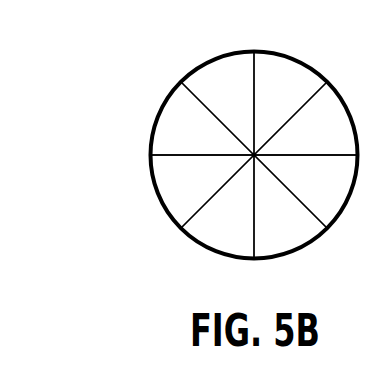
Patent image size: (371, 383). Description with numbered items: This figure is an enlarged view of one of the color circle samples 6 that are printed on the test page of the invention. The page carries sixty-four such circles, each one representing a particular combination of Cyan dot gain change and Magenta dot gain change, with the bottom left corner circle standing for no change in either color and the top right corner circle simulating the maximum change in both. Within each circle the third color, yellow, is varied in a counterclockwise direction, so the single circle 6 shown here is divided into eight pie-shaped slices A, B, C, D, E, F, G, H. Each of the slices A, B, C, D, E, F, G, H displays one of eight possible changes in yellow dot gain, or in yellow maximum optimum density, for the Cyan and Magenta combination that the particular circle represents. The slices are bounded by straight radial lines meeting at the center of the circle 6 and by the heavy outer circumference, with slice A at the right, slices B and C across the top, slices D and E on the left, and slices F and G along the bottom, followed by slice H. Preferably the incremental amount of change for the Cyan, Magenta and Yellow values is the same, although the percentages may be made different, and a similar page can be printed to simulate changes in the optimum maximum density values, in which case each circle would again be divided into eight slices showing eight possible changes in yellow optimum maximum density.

The color wheel with eight sectors 6 is at (229, 184).
The slice A is at (306, 118).
The slice B is at (290, 103).
The slice C is at (217, 103).
The slice D is at (203, 118).
The slice E is at (203, 191).
The slice F is at (217, 207).
The slice G is at (290, 207).
The slice H is at (306, 191).